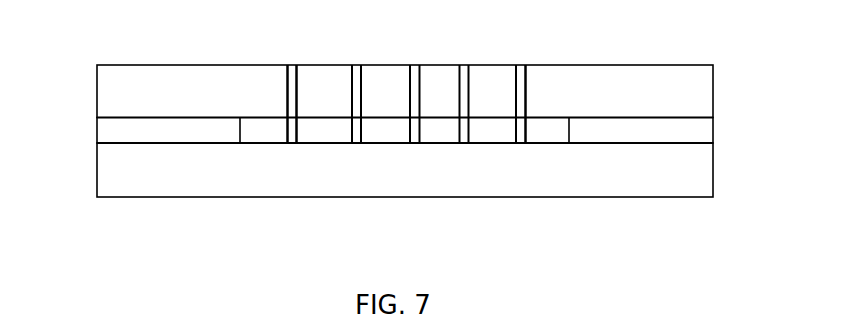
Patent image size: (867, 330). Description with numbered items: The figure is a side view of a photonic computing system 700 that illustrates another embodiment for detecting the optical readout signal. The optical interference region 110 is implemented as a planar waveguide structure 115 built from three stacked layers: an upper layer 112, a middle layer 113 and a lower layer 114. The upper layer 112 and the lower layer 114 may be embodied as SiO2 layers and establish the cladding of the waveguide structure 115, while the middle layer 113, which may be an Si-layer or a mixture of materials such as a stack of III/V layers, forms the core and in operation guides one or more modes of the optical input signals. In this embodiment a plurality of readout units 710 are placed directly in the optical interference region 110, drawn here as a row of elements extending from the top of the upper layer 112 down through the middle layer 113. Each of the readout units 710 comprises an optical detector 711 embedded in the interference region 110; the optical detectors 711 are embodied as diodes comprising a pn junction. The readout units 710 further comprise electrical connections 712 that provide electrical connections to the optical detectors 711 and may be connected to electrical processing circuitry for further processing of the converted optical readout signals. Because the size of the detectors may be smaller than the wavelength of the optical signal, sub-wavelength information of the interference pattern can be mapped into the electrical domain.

The photonic computing system 700 is at (746, 325).
The planar waveguide structure 115 is at (68, 66).
The upper layer 112 is at (690, 88).
The middle layer 113 is at (698, 132).
The lower layer 114 is at (701, 158).
The optical interference region 110 is at (488, 132).
The readout units 710 is at (288, 52).
The optical detectors 711 is at (464, 143).
The electrical connections 712 is at (288, 88).